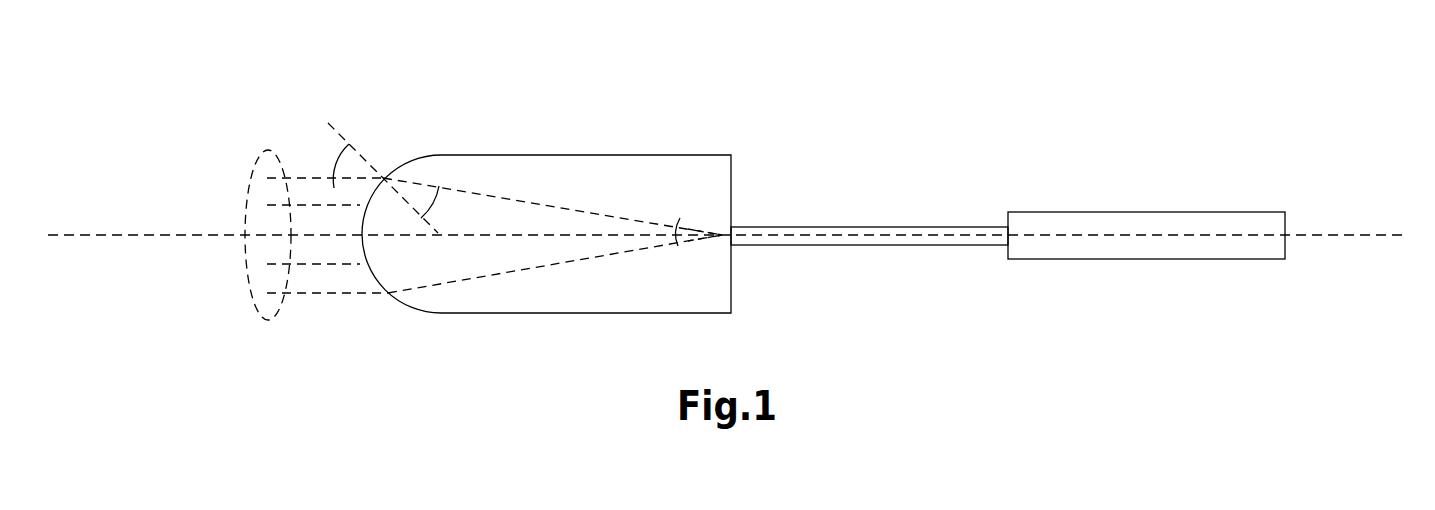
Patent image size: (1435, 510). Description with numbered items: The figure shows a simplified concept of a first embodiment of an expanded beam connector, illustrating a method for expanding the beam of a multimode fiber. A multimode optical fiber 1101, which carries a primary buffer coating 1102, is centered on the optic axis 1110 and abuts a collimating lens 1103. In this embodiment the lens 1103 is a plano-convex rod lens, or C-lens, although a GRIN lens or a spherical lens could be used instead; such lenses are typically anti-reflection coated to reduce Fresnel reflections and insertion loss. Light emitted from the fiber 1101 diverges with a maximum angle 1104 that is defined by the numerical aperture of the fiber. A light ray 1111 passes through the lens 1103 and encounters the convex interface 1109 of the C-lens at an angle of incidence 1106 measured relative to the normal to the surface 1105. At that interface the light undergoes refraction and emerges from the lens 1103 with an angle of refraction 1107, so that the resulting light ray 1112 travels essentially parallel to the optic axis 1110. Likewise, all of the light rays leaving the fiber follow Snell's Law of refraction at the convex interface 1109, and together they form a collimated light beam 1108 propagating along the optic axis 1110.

The multimode optical fiber 1101 is at (872, 225).
The primary buffer coating 1102 is at (1127, 212).
The collimating lens 1103 is at (585, 168).
The maximum angle 1104 is at (678, 233).
The normal to the surface 1105 is at (338, 137).
The angle of incidence 1106 is at (402, 188).
The angle of refraction 1107 is at (368, 175).
The collimated light beam 1108 is at (260, 307).
The convex interface 1109 is at (378, 282).
The optic axis 1110 is at (1328, 235).
The light ray 1111 is at (613, 217).
The light ray 1112 is at (302, 175).